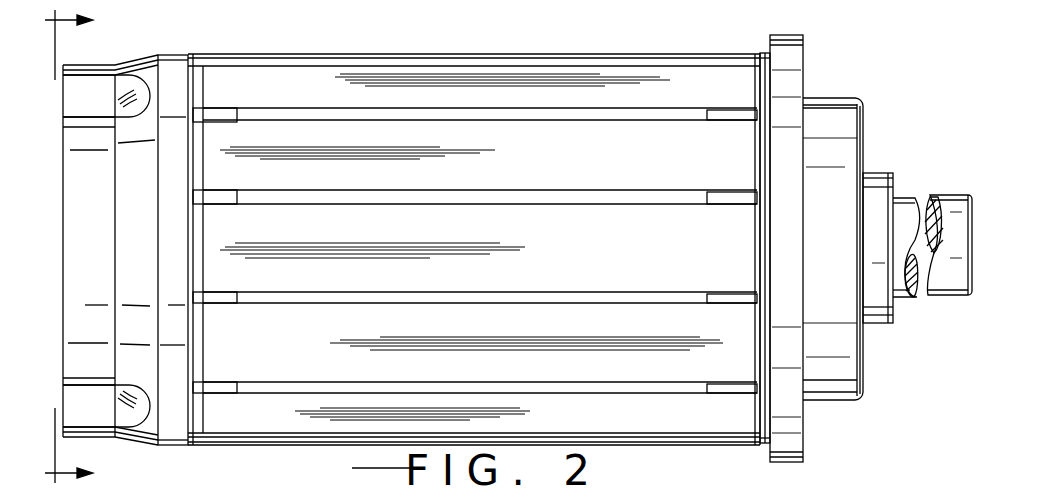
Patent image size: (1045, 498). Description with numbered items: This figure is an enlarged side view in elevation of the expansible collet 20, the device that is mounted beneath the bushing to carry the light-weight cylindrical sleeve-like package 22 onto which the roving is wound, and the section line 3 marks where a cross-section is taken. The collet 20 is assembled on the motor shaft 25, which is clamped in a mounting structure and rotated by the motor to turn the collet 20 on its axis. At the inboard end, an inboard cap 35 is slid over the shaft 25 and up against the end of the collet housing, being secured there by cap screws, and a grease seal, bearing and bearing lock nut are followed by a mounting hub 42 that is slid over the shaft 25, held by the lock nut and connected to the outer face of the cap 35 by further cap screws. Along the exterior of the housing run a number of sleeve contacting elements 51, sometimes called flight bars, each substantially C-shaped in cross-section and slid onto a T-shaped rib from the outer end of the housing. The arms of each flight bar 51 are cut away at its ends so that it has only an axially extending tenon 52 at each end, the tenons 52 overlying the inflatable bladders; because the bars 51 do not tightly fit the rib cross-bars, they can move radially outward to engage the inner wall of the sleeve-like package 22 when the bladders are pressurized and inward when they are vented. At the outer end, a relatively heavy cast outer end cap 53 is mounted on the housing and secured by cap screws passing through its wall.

The section line 3- 3 is at (80, 247).
The expansible collet 20 is at (734, 44).
The sleeve-like package 22 is at (452, 0).
The shaft 25 is at (901, 199).
The inboard cap 35 is at (812, 50).
The mounting hub 42 is at (865, 122).
The sleeve contacting elements 51 is at (569, 164).
The tenon 52 is at (214, 117).
The outer end cap 53 is at (137, 52).